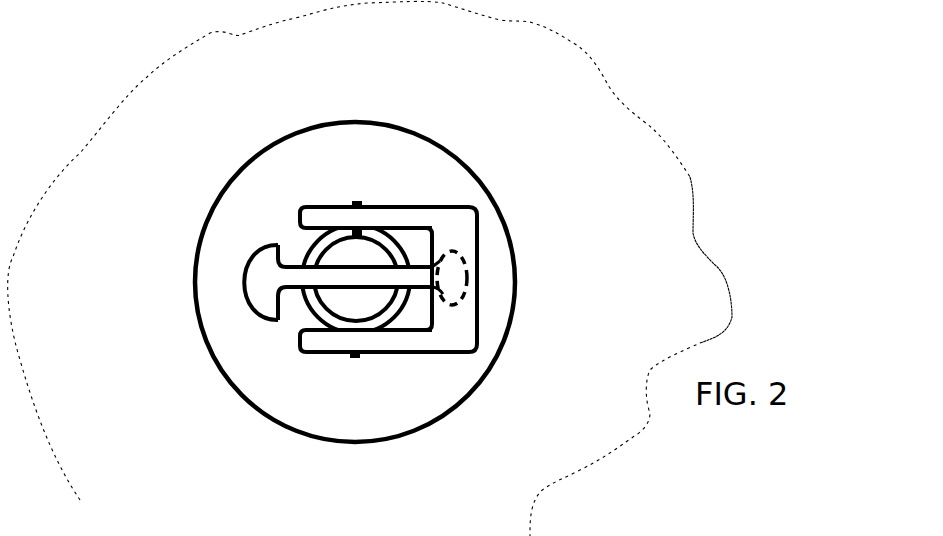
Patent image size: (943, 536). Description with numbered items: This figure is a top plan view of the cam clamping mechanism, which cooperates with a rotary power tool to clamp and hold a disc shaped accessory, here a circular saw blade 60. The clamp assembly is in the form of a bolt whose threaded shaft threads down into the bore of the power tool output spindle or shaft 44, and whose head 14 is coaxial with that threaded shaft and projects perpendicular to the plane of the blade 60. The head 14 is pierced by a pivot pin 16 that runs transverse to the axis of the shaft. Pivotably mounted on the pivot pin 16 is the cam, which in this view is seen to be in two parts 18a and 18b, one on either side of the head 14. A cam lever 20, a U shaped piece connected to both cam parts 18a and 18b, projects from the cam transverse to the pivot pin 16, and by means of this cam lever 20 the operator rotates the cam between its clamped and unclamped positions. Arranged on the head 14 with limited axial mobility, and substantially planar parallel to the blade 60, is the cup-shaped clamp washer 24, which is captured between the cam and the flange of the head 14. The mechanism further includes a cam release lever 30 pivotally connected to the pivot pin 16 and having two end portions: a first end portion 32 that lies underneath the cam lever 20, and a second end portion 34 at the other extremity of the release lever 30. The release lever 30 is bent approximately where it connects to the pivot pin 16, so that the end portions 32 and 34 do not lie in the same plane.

The head 14 is at (337, 253).
The pivot pin 16 is at (355, 201).
The cam part 18a is at (328, 203).
The cam part 18b is at (320, 337).
The cam lever 20 is at (455, 228).
The clamp washer 24 is at (408, 170).
The cam release lever 30 is at (290, 303).
The first end portion 32 is at (448, 280).
The second end portion 34 is at (267, 282).
The shaft 44 is at (498, 424).
The circular saw blade 60 is at (660, 312).